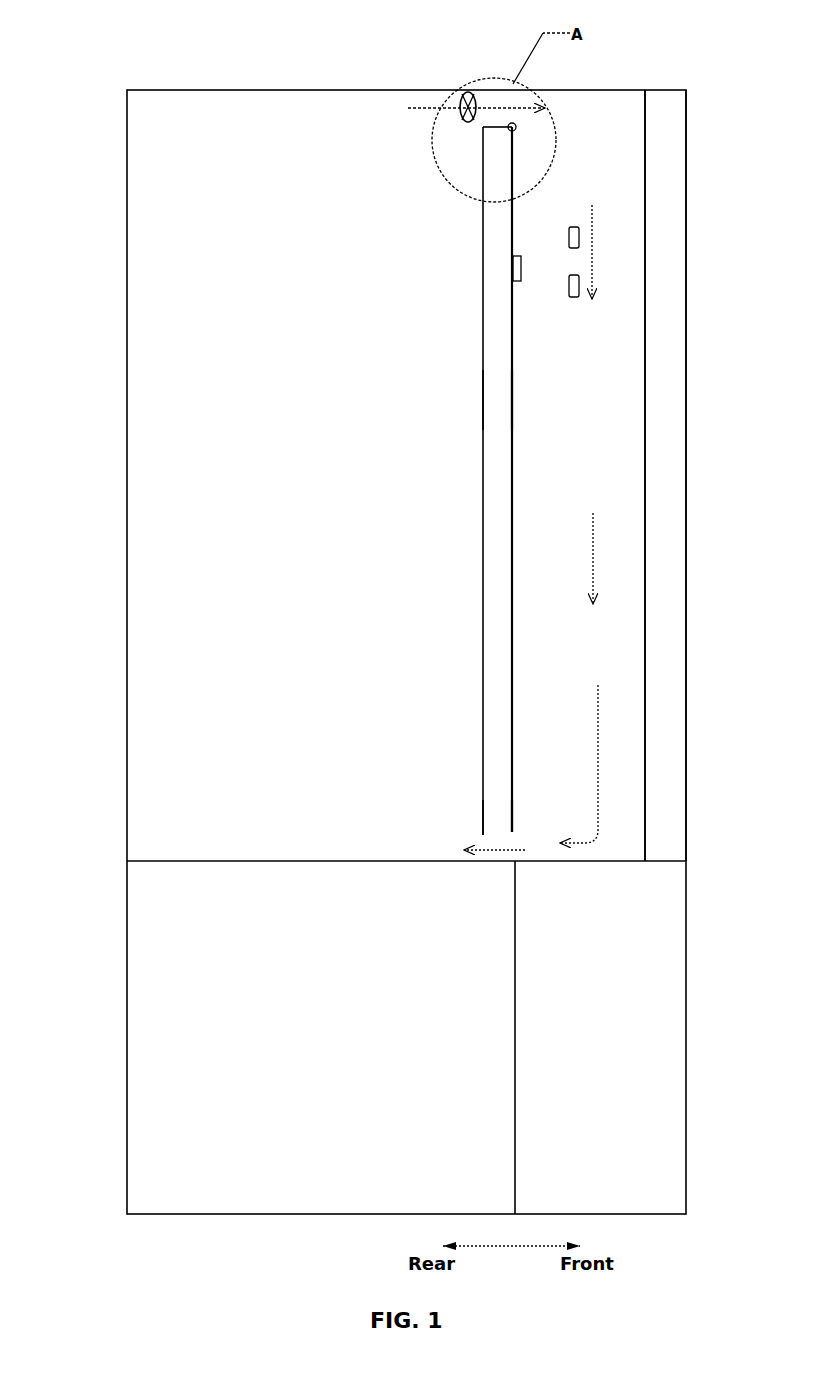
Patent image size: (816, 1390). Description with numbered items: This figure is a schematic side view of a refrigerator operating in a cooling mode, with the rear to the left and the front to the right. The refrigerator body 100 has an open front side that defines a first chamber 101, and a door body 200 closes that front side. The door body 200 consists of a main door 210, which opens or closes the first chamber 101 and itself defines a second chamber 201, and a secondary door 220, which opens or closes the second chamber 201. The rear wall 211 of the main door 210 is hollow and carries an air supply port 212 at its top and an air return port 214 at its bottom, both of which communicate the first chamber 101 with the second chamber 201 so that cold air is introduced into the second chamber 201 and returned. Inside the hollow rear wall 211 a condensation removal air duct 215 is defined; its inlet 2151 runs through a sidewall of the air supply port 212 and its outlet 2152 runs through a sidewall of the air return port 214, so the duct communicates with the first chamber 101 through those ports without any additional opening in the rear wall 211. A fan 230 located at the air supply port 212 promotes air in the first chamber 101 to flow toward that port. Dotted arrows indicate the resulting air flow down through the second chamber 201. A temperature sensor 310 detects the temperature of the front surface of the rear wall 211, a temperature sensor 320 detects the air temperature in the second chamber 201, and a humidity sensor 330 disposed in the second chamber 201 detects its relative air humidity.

The refrigerator body 100 is at (124, 250).
The first chamber 101 is at (164, 377).
The door body 200 is at (667, 47).
The second chamber 201 is at (606, 362).
The main door 210 is at (620, 90).
The rear wall 211 is at (481, 398).
The air supply port 212 is at (508, 103).
The air return port 214 is at (479, 841).
The condensation removal air duct 215 is at (498, 252).
The inlet 2151 is at (499, 134).
The outlet 2152 is at (500, 824).
The secondary door 220 is at (665, 98).
The fan 230 is at (458, 113).
The temperature sensor 310 is at (513, 268).
The temperature sensor 320 is at (575, 225).
The humidity sensor 330 is at (569, 287).